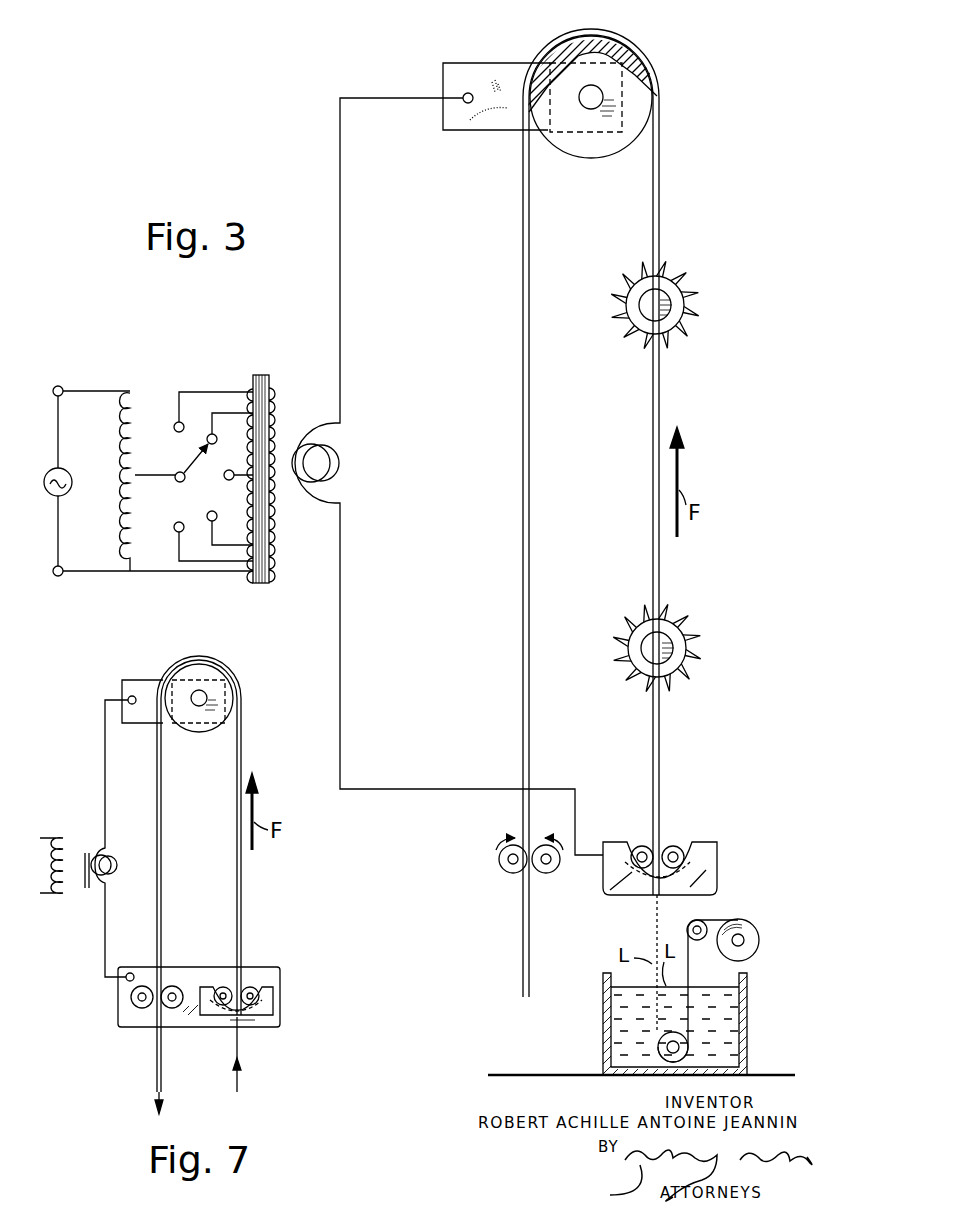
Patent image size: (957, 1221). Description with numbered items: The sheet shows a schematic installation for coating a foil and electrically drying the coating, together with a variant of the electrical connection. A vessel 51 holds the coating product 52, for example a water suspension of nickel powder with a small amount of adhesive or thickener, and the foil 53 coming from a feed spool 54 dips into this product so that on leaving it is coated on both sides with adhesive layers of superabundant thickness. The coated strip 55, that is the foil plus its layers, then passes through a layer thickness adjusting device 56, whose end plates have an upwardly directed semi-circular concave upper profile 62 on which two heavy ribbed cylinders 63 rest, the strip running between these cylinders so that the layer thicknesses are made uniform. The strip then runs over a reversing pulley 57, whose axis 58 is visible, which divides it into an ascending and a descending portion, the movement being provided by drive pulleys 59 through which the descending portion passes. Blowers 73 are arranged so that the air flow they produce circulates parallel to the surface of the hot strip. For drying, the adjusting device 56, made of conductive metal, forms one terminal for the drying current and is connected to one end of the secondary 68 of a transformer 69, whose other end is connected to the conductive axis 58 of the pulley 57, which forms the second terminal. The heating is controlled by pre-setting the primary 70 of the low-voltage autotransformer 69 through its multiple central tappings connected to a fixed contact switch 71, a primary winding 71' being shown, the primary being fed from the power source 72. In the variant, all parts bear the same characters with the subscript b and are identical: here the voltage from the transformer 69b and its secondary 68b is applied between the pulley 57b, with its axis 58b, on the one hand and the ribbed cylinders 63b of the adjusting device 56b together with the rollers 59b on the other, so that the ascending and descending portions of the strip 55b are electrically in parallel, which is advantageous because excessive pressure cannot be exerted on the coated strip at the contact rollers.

In FIG. 3, the vessel 51 is at (603, 1010).
In FIG. 3, the coating product 52 is at (726, 1022).
In FIG. 3, the foil 53 is at (690, 958).
In FIG. 3, the feed spool 54 is at (752, 926).
In FIG. 3, the strip 55 is at (665, 745).
In FIG. 3, the layer thickness adjusting device 56 is at (704, 826).
In FIG. 3, the reversing pulley 57 is at (615, 52).
In FIG. 3, the axis of the reversing pulley 58 is at (583, 103).
In FIG. 3, the drive pulleys 59 is at (545, 866).
In FIG. 3, the concave upper profile 62 is at (636, 846).
In FIG. 3, the heavy cylinders 63 is at (672, 845).
In FIG. 3, the secondary 68 is at (340, 460).
In FIG. 3, the transformer 69 is at (262, 373).
In FIG. 3, the primary 70 is at (270, 400).
In FIG. 3, the fixed contact switch 71 is at (194, 476).
In FIG. 3, the primary winding 71' is at (102, 482).
In FIG. 3, the power source 72 is at (70, 482).
In FIG. 3, the blowers 73 is at (700, 292).
In FIG. 7, the strip 55b is at (240, 892).
In FIG. 7, the layer thickness adjusting device 56b is at (265, 978).
In FIG. 7, the pulley 57b is at (205, 670).
In FIG. 7, the axis of the pulley 58b is at (200, 707).
In FIG. 7, the rollers 59b is at (170, 1008).
In FIG. 7, the ribbed cylinders 63b is at (238, 985).
In FIG. 7, the secondary 68b is at (115, 870).
In FIG. 7, the transformer 69b is at (82, 898).